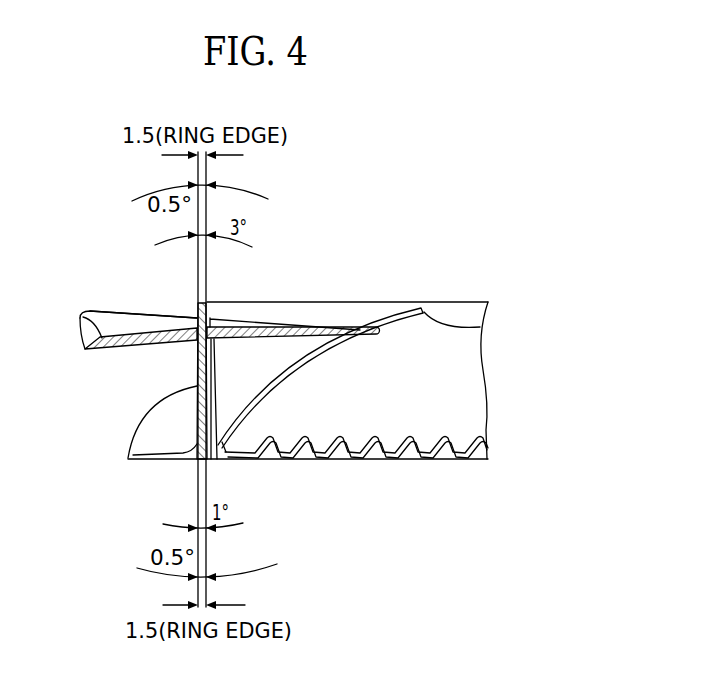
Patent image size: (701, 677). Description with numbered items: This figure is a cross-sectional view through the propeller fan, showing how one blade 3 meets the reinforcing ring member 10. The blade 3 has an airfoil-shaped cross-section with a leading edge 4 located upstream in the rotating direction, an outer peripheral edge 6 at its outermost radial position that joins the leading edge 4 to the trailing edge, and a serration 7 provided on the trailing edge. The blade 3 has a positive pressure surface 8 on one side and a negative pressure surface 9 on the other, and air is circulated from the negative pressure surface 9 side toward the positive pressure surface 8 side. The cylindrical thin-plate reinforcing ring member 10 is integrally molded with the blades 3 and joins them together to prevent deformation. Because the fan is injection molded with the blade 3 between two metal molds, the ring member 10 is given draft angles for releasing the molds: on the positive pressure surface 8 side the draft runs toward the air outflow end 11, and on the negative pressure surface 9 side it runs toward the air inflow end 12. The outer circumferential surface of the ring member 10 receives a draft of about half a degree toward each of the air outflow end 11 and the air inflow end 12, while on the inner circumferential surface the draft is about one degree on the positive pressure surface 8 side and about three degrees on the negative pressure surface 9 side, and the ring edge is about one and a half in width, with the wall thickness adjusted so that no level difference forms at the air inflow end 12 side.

The blade 3 is at (111, 325).
The leading edge 4 is at (300, 325).
The outer peripheral edge 6 is at (86, 348).
The serration 7 is at (355, 435).
The positive pressure surface 8 is at (148, 345).
The negative pressure surface 9 is at (155, 318).
The reinforcing ring member 10 is at (197, 418).
The air outflow end 11 is at (207, 461).
The air inflow end 12 is at (200, 306).